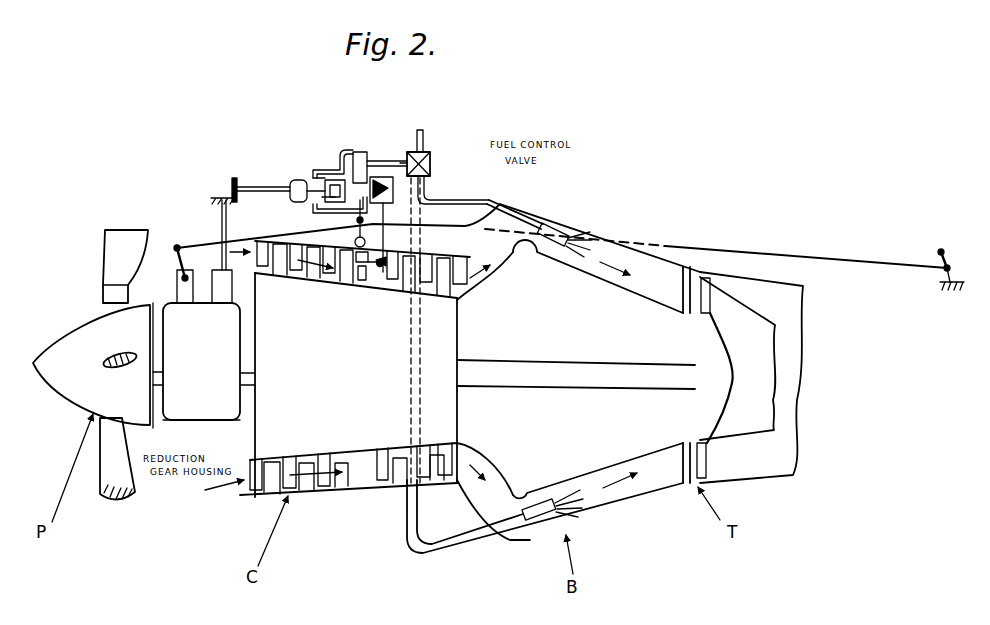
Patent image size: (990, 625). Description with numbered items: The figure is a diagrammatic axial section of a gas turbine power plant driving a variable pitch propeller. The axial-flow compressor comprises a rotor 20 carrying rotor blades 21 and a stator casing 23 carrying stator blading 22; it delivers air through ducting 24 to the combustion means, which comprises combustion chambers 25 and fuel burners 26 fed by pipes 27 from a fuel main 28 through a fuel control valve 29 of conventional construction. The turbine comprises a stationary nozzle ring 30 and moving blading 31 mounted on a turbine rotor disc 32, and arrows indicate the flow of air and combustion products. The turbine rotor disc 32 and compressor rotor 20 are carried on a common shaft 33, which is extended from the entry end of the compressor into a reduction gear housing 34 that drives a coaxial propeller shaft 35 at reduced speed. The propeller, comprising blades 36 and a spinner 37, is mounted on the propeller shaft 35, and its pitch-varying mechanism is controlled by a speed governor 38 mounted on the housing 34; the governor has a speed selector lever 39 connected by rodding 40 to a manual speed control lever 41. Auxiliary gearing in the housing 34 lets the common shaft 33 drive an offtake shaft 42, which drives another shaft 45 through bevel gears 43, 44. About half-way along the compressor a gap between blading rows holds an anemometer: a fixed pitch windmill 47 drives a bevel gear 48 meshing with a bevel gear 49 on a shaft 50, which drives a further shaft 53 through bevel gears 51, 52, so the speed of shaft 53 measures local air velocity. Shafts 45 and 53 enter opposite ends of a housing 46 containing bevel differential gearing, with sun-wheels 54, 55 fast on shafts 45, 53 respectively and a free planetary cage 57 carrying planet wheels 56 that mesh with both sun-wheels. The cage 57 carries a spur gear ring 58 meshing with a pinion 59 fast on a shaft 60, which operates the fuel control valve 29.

The rotor 20 is at (440, 357).
The rotor blades 21 is at (330, 462).
The stator blading 22 is at (260, 470).
The stator casing 23 is at (366, 488).
The ducting 24 is at (483, 286).
The combustion chambers 25 is at (623, 292).
The fuel burners 26 is at (559, 252).
The pipes 27 is at (478, 205).
The fuel main 28 is at (425, 139).
The fuel control valve 29 is at (430, 160).
The stationary nozzle ring 30 is at (690, 300).
The moving blading 31 is at (708, 300).
The turbine rotor disc 32 is at (705, 355).
The common shaft 33 is at (248, 378).
The reduction gear housing 34 is at (206, 410).
The propeller shaft 35 is at (191, 426).
The propeller blades 36 is at (107, 264).
The spinner 37 is at (93, 395).
The speed governor 38 is at (183, 298).
The speed selector lever 39 is at (180, 265).
The rodding 40 is at (196, 243).
The manual speed control lever 41 is at (940, 253).
The offtake shaft 42 is at (223, 258).
The bevel gear 43 is at (214, 197).
The bevel gear 44 is at (232, 184).
The shaft 45 is at (268, 186).
The housing 46 is at (361, 152).
The windmill 47 is at (356, 282).
The bevel gear 48 is at (372, 268).
The bevel gear 49 is at (382, 270).
The shaft 50 is at (441, 242).
The bevel gear 51 is at (394, 197).
The bevel gear 52 is at (430, 186).
The shaft 53 is at (360, 176).
The sun-wheel 54 is at (322, 198).
The sun-wheel 55 is at (358, 224).
The planet wheels 56 is at (334, 180).
The planetary cage 57 is at (315, 172).
The spur gear ring 58 is at (395, 237).
The pinion 59 is at (350, 150).
The shaft 60 is at (403, 161).